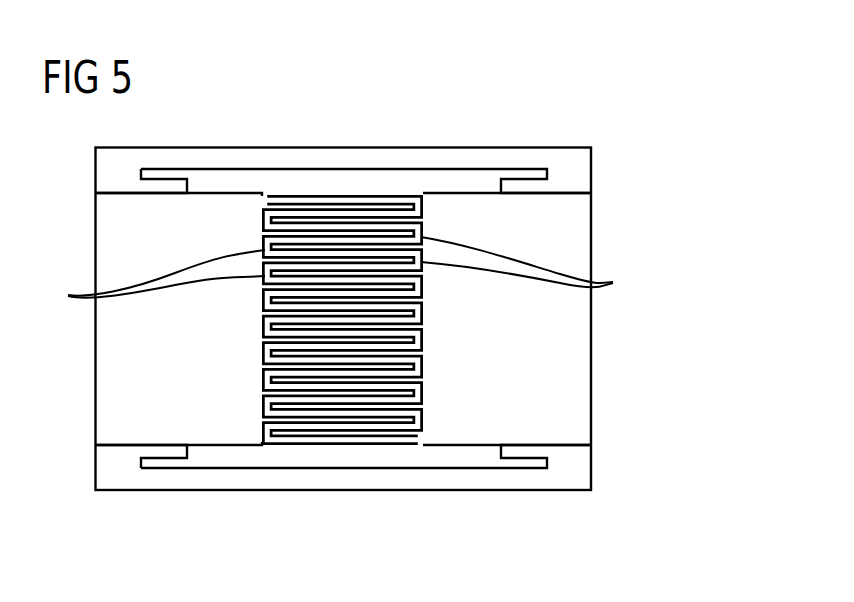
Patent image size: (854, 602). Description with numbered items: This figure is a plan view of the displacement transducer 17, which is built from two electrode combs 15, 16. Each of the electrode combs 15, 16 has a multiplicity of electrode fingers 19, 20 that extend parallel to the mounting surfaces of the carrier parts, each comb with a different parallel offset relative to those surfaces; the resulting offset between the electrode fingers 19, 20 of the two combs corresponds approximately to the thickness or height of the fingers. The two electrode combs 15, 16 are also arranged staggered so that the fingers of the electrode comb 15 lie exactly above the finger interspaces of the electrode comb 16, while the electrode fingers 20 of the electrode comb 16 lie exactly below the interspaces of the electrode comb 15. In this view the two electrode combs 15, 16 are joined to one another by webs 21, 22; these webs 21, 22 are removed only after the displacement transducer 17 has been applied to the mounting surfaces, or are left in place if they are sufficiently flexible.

The electrode comb 15 is at (220, 207).
The electrode comb 16 is at (460, 205).
The displacement transducer 17 is at (295, 183).
The electrode fingers 19 is at (533, 266).
The electrode fingers 20 is at (151, 279).
The web 21 is at (343, 157).
The web 22 is at (343, 480).